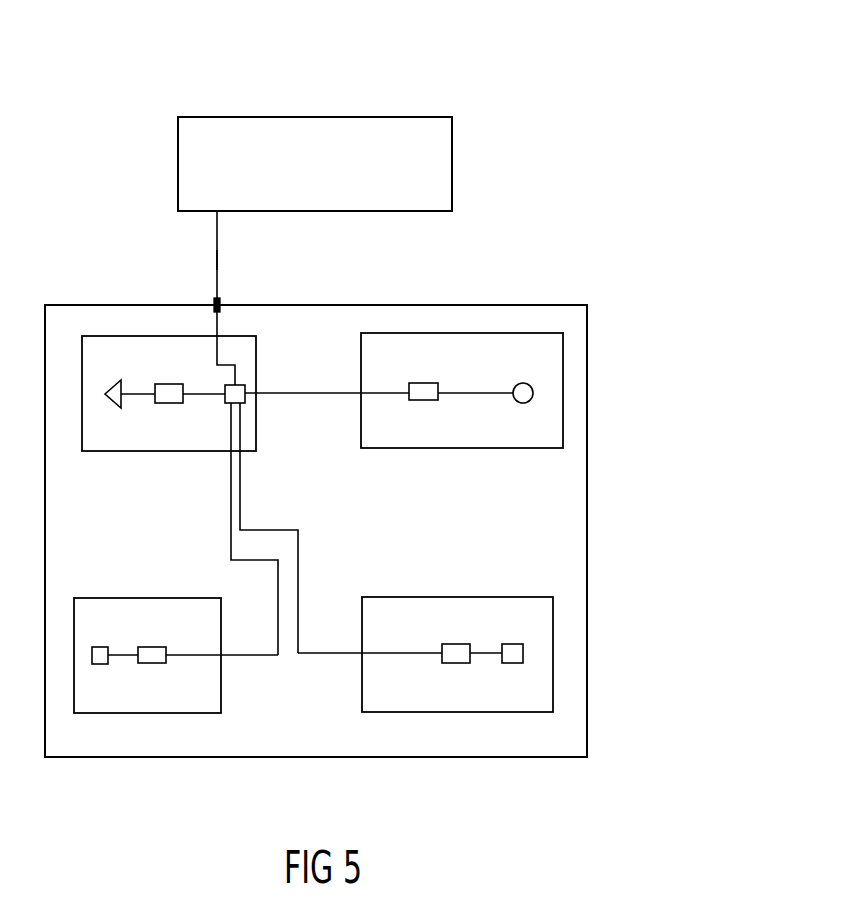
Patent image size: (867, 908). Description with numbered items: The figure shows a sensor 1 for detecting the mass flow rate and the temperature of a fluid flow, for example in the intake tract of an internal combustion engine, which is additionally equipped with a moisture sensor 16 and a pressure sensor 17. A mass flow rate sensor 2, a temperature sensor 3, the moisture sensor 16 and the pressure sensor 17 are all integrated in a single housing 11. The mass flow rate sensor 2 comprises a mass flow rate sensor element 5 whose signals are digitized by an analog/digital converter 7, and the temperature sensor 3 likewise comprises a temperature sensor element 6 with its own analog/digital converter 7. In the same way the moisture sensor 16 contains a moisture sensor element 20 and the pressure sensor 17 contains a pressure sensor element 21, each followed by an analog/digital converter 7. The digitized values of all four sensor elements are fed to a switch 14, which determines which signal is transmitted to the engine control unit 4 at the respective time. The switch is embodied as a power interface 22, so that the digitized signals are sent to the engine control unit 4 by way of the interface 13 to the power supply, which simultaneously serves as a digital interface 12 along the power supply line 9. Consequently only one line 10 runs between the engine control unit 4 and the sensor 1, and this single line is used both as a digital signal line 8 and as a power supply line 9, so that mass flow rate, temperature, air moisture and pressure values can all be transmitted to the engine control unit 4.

The sensor 1 is at (570, 305).
The mass flow rate sensor 2 is at (100, 446).
The temperature sensor 3 is at (393, 425).
The engine control unit 4 is at (438, 123).
The mass flow rate sensor element 5 is at (115, 383).
The temperature sensor element 6 is at (523, 398).
The analog/digital converter 7 is at (168, 387).
The digital signal line 8 is at (217, 249).
The power supply line 9 is at (217, 252).
The bus line 10 is at (347, 393).
The housing 11 is at (580, 366).
The digital interface 12 is at (217, 303).
The interface to the power supply 13 is at (221, 303).
The switch 14 is at (245, 397).
The moisture sensor 16 is at (142, 607).
The pressure sensor 17 is at (390, 608).
The moisture sensor element 20 is at (100, 663).
The pressure sensor element 21 is at (517, 657).
The power interface 22 is at (228, 408).